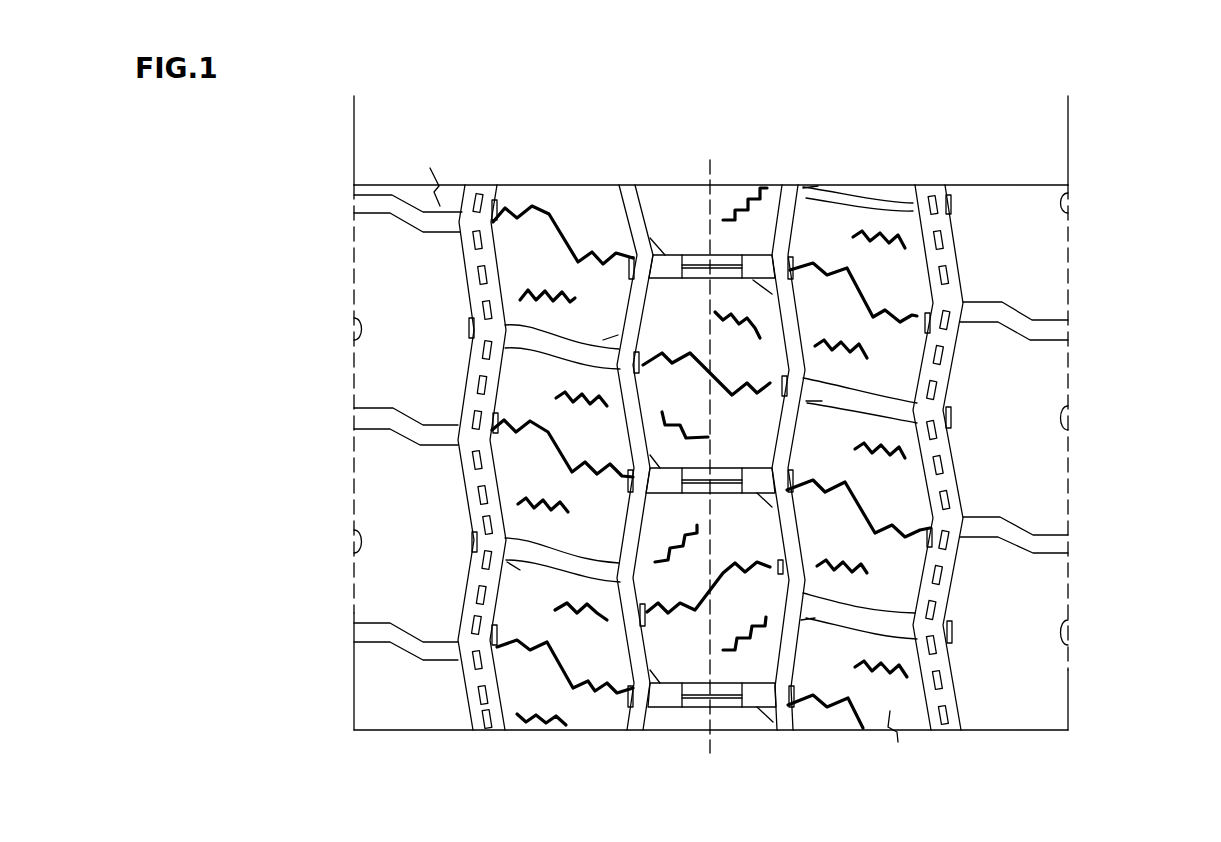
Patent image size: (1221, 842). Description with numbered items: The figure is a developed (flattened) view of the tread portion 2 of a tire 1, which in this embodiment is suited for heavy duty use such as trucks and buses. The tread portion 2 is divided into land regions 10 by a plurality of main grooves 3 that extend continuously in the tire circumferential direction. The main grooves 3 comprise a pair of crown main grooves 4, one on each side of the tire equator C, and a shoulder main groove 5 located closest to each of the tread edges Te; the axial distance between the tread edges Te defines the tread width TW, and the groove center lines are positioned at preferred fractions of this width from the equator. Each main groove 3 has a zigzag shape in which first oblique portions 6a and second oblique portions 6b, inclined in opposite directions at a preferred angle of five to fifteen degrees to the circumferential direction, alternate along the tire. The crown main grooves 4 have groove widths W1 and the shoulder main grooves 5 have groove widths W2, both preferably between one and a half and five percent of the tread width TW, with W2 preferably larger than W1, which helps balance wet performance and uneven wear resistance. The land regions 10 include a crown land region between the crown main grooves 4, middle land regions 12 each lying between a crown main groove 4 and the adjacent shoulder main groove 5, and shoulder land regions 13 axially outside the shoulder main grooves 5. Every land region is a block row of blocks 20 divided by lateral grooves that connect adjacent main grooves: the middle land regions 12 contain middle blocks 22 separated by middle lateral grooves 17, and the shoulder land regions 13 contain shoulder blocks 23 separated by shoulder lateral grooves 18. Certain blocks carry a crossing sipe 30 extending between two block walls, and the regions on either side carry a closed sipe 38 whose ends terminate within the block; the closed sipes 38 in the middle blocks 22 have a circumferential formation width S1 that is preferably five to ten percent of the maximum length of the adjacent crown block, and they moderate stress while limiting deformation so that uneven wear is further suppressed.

The tire 1 is at (768, 158).
The tread portion 2 is at (724, 184).
The main grooves 3 is at (637, 229).
The crown main grooves 4 is at (790, 206).
The shoulder main groove 5 is at (464, 204).
The first oblique portions 6a is at (651, 657).
The second oblique portions 6b is at (490, 645).
The land regions 10 is at (682, 231).
The middle land regions 12 is at (560, 226).
The shoulder land regions 13 is at (400, 253).
The middle lateral grooves 17 is at (552, 557).
The shoulder lateral grooves 18 is at (409, 643).
The blocks 20 is at (751, 362).
The middle blocks 22 is at (549, 413).
The shoulder blocks 23 is at (1008, 645).
The crossing sipe 30 is at (559, 237).
The closed sipe 38 is at (526, 299).
The tire equator C is at (711, 445).
The tread edges Te is at (352, 226).
The tread width TW is at (1068, 96).
The formation width of closed sipe S1 is at (548, 585).
The groove width of crown main groove W1 is at (748, 658).
The groove width of shoulder main groove W2 is at (983, 678).